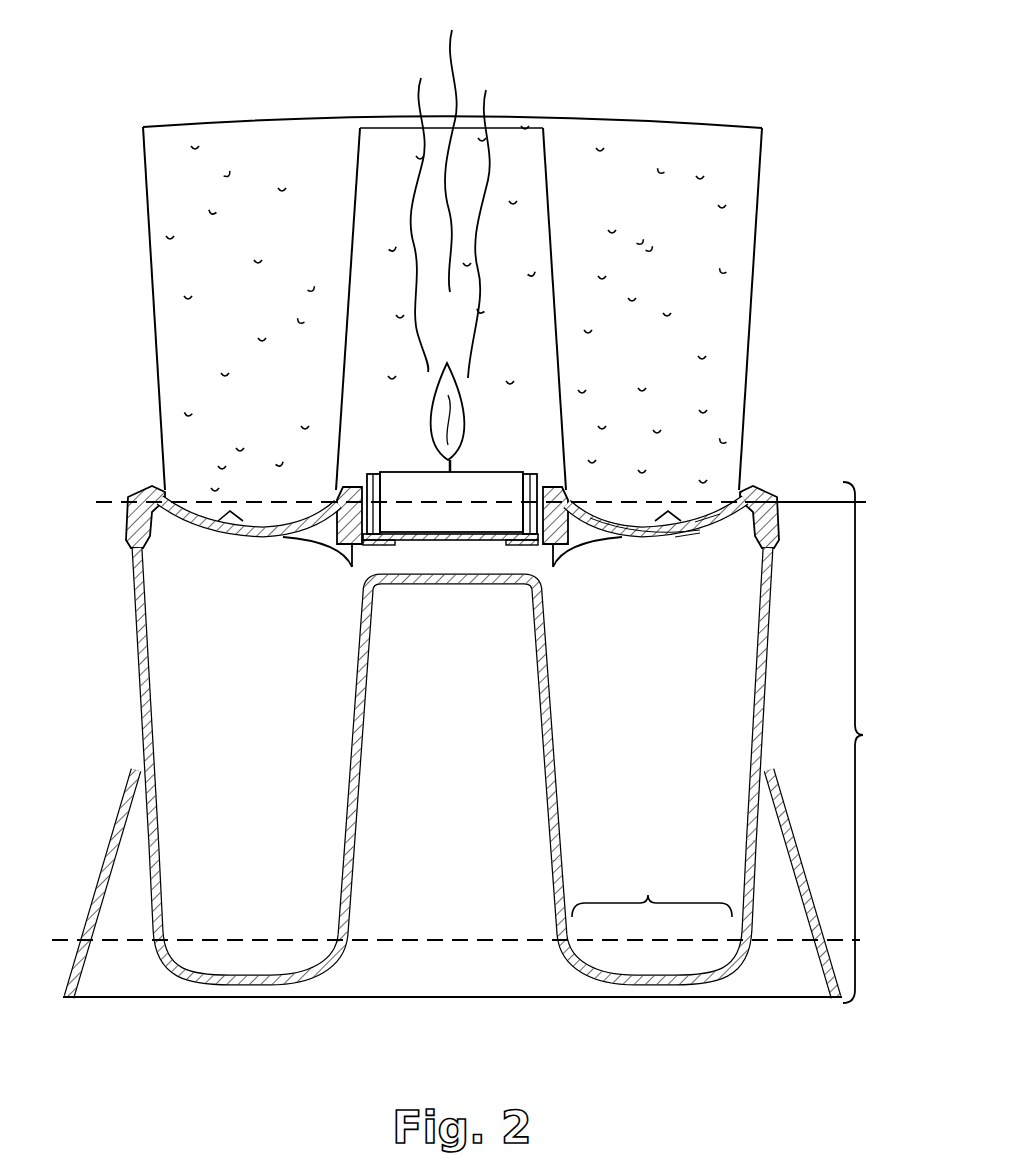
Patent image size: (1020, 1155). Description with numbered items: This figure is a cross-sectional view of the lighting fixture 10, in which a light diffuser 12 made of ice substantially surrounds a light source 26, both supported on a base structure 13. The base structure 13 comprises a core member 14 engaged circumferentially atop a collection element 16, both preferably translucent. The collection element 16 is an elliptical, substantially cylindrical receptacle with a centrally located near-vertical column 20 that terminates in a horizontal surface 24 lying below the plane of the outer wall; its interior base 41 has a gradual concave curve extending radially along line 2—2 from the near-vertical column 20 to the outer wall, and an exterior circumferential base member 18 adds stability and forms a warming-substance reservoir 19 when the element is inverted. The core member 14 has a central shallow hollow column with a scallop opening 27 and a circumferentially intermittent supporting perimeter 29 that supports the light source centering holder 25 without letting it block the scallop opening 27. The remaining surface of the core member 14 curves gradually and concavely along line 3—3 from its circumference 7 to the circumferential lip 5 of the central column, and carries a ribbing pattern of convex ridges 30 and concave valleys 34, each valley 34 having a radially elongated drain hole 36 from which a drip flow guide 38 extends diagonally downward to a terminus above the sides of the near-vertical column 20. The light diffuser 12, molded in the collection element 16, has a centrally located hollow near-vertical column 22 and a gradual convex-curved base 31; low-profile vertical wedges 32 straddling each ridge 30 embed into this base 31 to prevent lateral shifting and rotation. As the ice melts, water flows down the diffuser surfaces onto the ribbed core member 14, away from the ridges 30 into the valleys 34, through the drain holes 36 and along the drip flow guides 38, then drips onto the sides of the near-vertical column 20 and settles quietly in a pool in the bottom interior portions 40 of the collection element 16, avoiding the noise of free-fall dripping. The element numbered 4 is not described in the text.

The lighting fixture 10 is at (112, 120).
The light diffuser 12 is at (140, 328).
The hollow near-vertical column 22 is at (542, 152).
The light source centering holder 25 is at (531, 468).
The light source 26 is at (438, 507).
The scallop opening 27 is at (432, 545).
The circumferentially intermittent supporting perimeter 29 is at (508, 547).
The circumferential lip 5 is at (345, 487).
The core member 14 is at (418, 497).
The circumference 7 is at (164, 492).
The left tray sheet 4 is at (201, 534).
The ridges 30 is at (594, 505).
The valleys 34 is at (615, 528).
The low-profile vertical wedges 32 is at (667, 511).
The gradual convex-curved base 31 is at (703, 522).
The drain hole 36 is at (687, 538).
The drip flow guide 38 is at (330, 555).
The line 3— 3 is at (481, 502).
The base structure 13 is at (473, 742).
The exterior circumferential base member 18 is at (100, 870).
The collection element 16 is at (125, 641).
The interior base 41 is at (240, 973).
The near-vertical column 20 is at (356, 812).
The horizontal surface 24 is at (475, 590).
The line 2— 2 is at (455, 912).
The bottom interior portions 40 is at (236, 867).
The warming-substance reservoir 19 is at (112, 957).